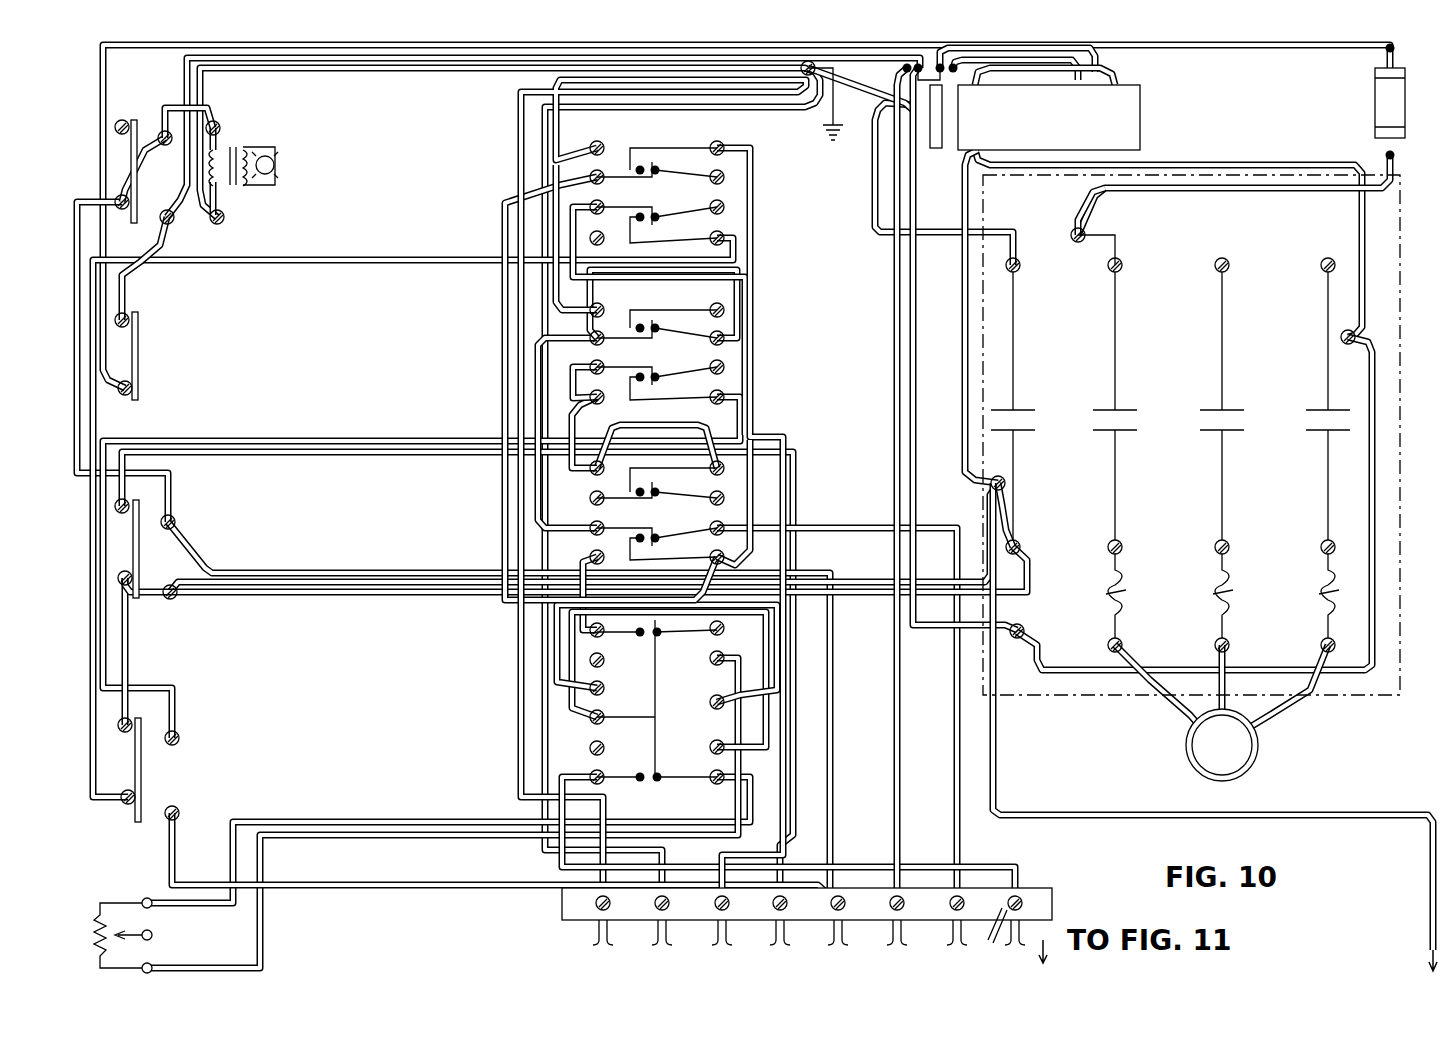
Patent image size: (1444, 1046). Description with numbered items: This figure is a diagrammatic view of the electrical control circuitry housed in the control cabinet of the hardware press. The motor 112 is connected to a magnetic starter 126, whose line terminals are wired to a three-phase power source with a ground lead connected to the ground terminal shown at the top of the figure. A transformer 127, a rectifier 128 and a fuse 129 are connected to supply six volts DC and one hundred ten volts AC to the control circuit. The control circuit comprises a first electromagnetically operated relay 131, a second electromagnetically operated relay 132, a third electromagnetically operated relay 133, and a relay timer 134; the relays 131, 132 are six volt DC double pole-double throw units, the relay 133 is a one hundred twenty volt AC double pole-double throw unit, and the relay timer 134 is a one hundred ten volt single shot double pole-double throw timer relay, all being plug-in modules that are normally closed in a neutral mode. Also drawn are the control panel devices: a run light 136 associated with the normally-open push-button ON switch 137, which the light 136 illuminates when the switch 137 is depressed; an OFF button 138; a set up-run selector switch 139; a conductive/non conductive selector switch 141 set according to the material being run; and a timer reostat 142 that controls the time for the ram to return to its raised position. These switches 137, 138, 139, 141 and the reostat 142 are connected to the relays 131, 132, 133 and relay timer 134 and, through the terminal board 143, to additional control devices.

The motor 112 is at (1258, 752).
The magnetic starter 126 is at (1402, 405).
The transformer 127 is at (1120, 118).
The rectifier 128 is at (936, 150).
The fuse 129 is at (1375, 95).
The first electromagnetically operated relay 131 is at (735, 193).
The second electromagnetically operated relay 132 is at (735, 353).
The third electromagnetically operated relay 133 is at (740, 508).
The relay timer 134 is at (570, 740).
The run light 136 is at (275, 165).
The ON switch 137 is at (128, 197).
The OFF button 138 is at (140, 352).
The set up-run selector switch 139 is at (140, 552).
The conductive/non conductive selector switch 141 is at (142, 772).
The timer reostat 142 is at (135, 950).
The terminal board 143 is at (562, 900).